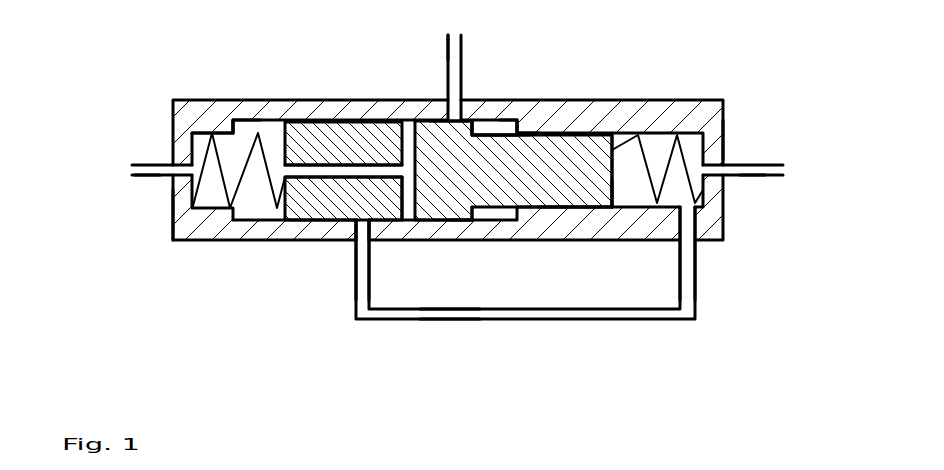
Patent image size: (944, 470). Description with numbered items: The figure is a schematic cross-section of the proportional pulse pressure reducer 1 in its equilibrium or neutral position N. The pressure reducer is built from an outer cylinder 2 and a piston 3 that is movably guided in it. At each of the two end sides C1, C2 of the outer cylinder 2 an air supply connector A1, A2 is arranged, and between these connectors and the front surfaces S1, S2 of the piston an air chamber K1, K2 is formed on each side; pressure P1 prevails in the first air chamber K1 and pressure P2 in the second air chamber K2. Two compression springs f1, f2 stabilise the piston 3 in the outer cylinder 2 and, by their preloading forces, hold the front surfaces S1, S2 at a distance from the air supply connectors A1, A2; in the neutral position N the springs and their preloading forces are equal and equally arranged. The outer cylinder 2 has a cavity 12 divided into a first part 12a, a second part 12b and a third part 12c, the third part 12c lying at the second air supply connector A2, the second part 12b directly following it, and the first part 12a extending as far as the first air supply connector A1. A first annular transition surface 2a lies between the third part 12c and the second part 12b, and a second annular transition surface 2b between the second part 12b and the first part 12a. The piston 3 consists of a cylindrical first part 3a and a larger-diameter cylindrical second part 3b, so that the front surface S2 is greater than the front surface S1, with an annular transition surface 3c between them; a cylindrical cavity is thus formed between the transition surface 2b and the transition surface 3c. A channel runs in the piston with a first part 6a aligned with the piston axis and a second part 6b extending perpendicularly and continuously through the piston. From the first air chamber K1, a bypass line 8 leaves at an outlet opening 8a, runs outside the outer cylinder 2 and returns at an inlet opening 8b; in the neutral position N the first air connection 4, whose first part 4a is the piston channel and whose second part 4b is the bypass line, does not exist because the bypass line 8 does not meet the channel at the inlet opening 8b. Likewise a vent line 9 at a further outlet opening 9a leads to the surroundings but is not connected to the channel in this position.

The pressure reducer 1 is at (98, 75).
The outer cylinder 2 is at (568, 113).
The first annular transition surface 2a is at (243, 128).
The second annular transition surface 2b is at (512, 120).
The piston 3 is at (438, 215).
The first part of the piston 3a is at (545, 190).
The second part of the piston 3b is at (462, 190).
The annular transition surface of the piston 3c is at (450, 120).
The first air connection 4 is at (312, 298).
The first part of the first air connection 4a is at (402, 176).
The second part of the first air connection 4b is at (448, 313).
The first part of the channel 6a is at (297, 173).
The second part of the channel 6b is at (363, 229).
The bypass line 8 is at (632, 315).
The outlet opening 8a is at (688, 230).
The inlet opening 8b is at (363, 229).
The vent line 9 is at (455, 60).
The outlet opening 9a is at (458, 118).
The cavity in the outer cylinder 12 is at (503, 124).
The first part of the cavity 12a is at (650, 158).
The second part of the cavity 12b is at (316, 122).
The third part of the cavity 12c is at (240, 128).
The first air chamber K1 is at (632, 200).
The second air chamber K2 is at (223, 143).
The air pressure P1 is at (765, 170).
The air pressure P2 is at (156, 156).
The first air supply connector A1 is at (750, 176).
The second air supply connector A2 is at (143, 176).
The end side of the outer cylinder C1 is at (724, 142).
The end side of the outer cylinder C2 is at (172, 212).
The front surface of the piston S1 is at (620, 148).
The front surface of the piston S2 is at (272, 139).
The compression spring f1 is at (723, 108).
The compression spring f2 is at (268, 198).
The neutral position N is at (400, 45).